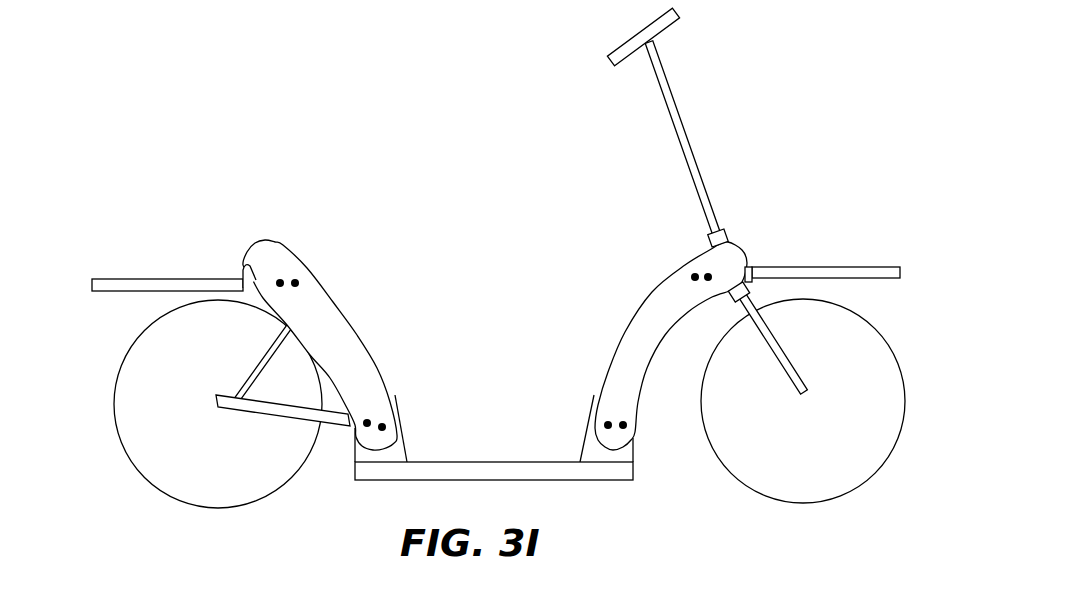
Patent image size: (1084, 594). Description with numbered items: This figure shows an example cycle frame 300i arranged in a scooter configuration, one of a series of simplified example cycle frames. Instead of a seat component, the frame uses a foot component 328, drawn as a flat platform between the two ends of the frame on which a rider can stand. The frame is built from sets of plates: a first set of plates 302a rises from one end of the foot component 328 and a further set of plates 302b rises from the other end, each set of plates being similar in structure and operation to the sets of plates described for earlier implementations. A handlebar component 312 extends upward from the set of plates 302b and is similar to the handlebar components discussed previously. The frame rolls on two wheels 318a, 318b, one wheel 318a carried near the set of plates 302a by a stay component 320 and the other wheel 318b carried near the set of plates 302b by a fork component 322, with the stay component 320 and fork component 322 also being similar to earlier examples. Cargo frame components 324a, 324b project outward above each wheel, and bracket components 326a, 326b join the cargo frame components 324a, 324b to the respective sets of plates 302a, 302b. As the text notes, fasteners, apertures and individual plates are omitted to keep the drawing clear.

The cycle frame 300i is at (178, 156).
The handlebar component 312 is at (680, 103).
The wheel 318a is at (113, 380).
The wheel 318b is at (893, 353).
The stay component 320 is at (247, 412).
The fork component 322 is at (775, 358).
The cargo frame component 324a is at (142, 280).
The cargo frame component 324b is at (847, 264).
The bracket component 326a is at (243, 268).
The bracket component 326b is at (748, 252).
The first set of plates 302a is at (328, 285).
The set of plates 302b is at (648, 300).
The foot component 328 is at (521, 462).